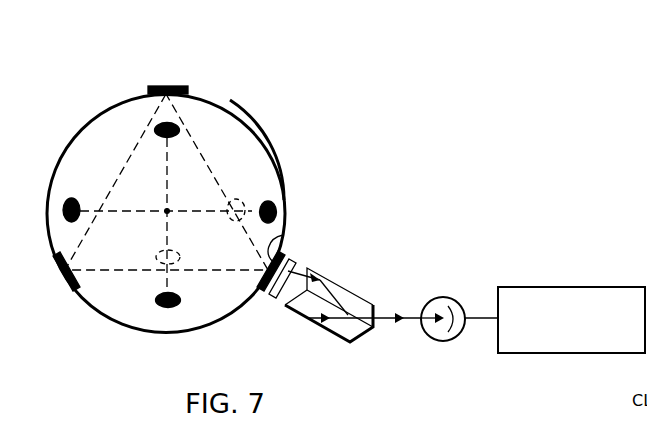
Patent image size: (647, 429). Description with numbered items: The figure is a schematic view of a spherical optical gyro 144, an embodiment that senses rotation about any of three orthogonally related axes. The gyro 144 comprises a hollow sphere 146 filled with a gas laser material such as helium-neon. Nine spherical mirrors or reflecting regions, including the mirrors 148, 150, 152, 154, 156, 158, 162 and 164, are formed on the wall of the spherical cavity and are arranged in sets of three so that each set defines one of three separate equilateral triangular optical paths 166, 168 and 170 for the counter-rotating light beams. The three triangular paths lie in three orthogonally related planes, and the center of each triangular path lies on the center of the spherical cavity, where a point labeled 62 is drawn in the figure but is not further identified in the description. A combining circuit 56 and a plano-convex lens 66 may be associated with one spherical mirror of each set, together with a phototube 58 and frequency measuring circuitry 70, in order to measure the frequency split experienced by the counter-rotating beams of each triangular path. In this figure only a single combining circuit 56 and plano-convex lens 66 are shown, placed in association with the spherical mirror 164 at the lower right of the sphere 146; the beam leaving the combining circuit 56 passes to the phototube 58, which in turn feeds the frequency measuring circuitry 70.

The spherical optical gyro 144 is at (94, 106).
The hollow sphere 146 is at (258, 137).
The spherical mirror 148 is at (68, 200).
The spherical mirror 150 is at (277, 212).
The spherical mirror 152 is at (247, 198).
The spherical mirror 154 is at (172, 125).
The spherical mirror 156 is at (180, 300).
The spherical mirror 158 is at (155, 255).
The spherical mirror 162 is at (158, 86).
The spherical mirror 164 is at (283, 235).
The equilateral triangular optical path 166 is at (141, 211).
The equilateral triangular optical path 168 is at (170, 200).
The equilateral triangular optical path 170 is at (123, 175).
The center axis 62 is at (169, 212).
The plano-convex lens 66 is at (275, 299).
The combining circuit 56 is at (318, 340).
The phototube 58 is at (443, 297).
The frequency measuring circuitry 70 is at (573, 287).